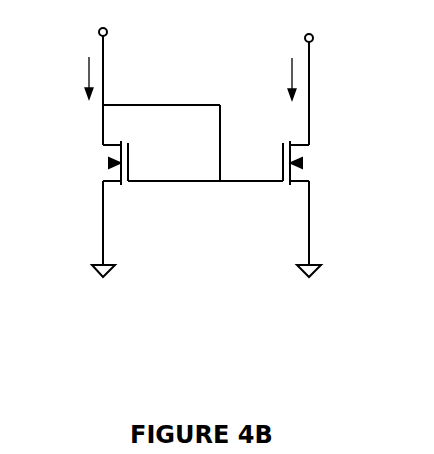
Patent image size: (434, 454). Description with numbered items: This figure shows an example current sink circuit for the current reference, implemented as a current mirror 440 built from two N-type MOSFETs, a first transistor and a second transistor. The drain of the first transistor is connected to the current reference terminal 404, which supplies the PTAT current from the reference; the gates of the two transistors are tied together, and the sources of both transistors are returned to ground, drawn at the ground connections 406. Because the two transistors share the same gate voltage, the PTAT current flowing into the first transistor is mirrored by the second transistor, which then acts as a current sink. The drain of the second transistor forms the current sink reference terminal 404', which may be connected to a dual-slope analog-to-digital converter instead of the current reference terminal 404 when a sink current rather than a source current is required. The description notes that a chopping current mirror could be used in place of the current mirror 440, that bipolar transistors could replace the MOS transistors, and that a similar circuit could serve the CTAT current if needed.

The current mirror 440 is at (220, 205).
The current reference terminal 404 is at (143, 33).
The current sink reference terminal 404' is at (350, 29).
The ground terminal 406 is at (103, 240).